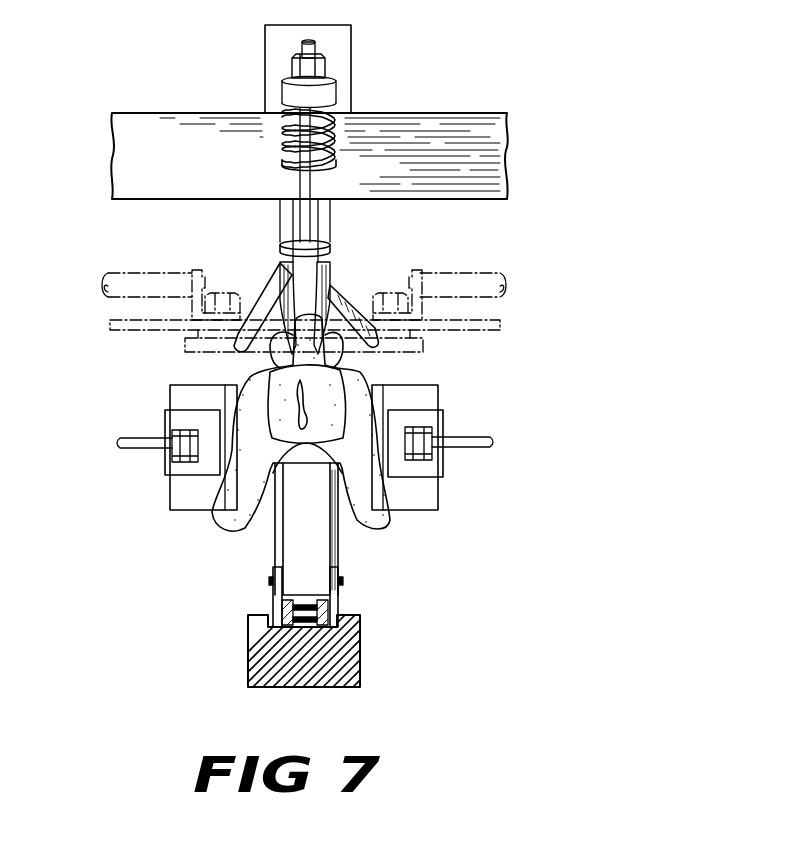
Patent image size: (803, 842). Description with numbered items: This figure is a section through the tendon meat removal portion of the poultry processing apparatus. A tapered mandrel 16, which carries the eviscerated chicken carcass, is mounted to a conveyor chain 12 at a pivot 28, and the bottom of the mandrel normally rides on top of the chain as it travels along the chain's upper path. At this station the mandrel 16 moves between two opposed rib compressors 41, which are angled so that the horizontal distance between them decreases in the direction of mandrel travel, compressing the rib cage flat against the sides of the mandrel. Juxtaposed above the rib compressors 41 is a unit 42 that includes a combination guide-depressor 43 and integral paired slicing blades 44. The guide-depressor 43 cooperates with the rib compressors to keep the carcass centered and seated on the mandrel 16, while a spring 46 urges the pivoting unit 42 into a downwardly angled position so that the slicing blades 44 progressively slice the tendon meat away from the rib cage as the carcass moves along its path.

The chain 12 is at (280, 603).
The mandrel 16 is at (300, 520).
The pivot 28 is at (344, 580).
The rib compressors 41 is at (195, 503).
The unit 42 is at (283, 223).
The guide-depressor 43 is at (265, 302).
The slicing blades 44 is at (343, 297).
The spring 46 is at (338, 136).